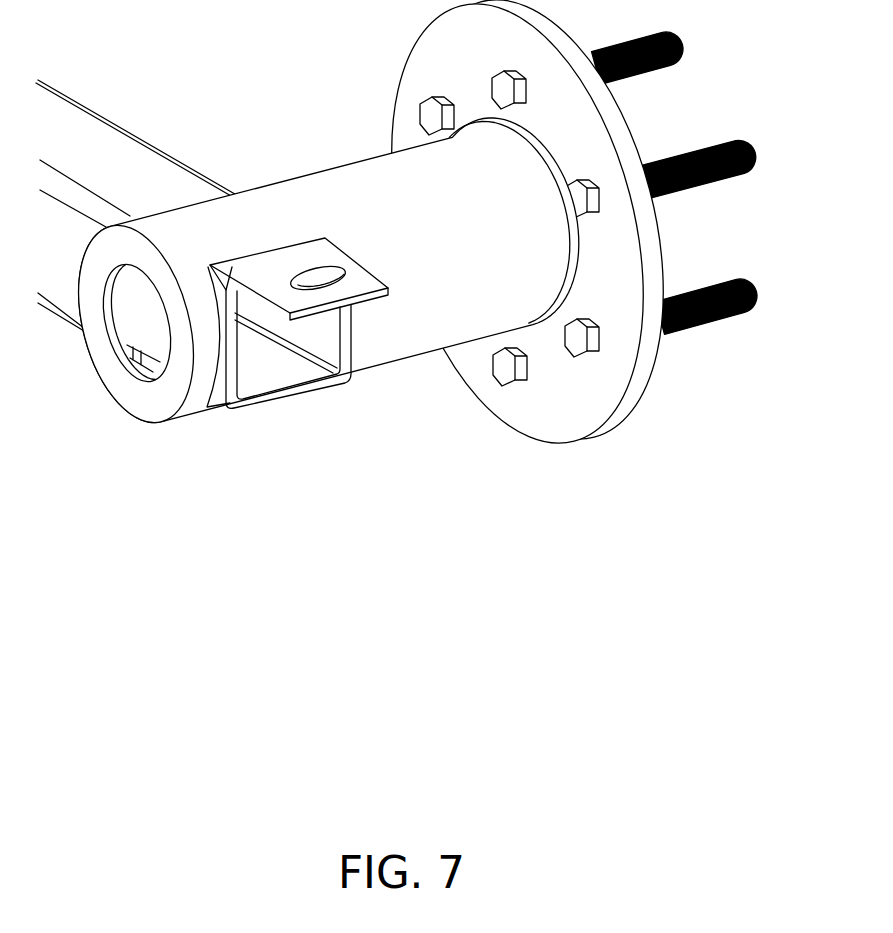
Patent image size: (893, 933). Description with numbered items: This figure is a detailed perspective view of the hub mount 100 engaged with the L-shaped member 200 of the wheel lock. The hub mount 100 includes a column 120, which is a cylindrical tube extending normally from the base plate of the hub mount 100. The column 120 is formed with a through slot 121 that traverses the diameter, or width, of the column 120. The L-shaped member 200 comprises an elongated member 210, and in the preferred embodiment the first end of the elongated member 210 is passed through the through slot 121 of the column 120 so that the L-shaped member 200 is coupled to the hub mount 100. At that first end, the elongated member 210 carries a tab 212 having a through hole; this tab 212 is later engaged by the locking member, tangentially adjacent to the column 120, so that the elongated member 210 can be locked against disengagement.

The hub mount 100 is at (128, 393).
The column 120 is at (377, 358).
The through slot 121 is at (331, 228).
The L-shaped member 200 is at (97, 136).
The elongated member 210 is at (172, 176).
The tab 212 is at (365, 280).